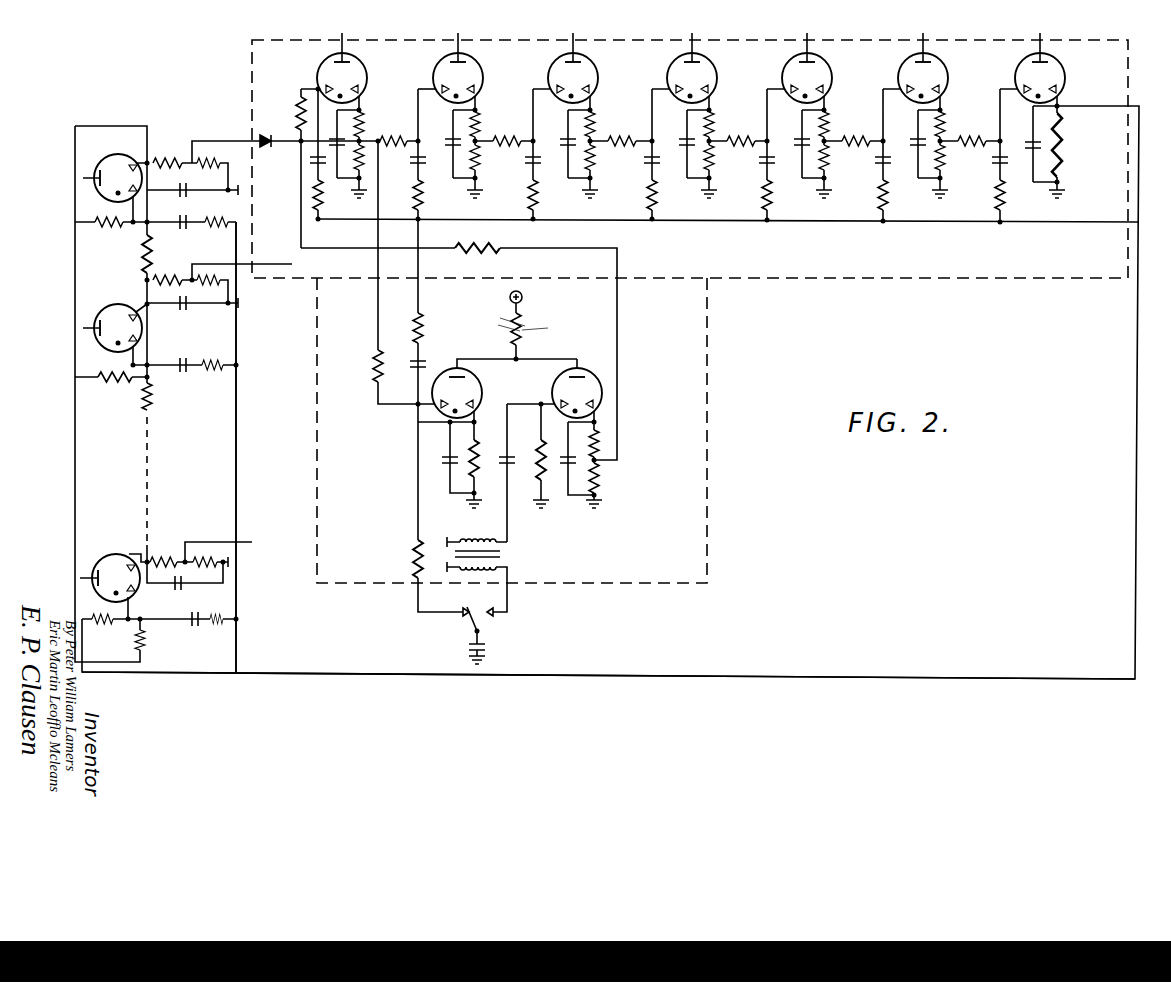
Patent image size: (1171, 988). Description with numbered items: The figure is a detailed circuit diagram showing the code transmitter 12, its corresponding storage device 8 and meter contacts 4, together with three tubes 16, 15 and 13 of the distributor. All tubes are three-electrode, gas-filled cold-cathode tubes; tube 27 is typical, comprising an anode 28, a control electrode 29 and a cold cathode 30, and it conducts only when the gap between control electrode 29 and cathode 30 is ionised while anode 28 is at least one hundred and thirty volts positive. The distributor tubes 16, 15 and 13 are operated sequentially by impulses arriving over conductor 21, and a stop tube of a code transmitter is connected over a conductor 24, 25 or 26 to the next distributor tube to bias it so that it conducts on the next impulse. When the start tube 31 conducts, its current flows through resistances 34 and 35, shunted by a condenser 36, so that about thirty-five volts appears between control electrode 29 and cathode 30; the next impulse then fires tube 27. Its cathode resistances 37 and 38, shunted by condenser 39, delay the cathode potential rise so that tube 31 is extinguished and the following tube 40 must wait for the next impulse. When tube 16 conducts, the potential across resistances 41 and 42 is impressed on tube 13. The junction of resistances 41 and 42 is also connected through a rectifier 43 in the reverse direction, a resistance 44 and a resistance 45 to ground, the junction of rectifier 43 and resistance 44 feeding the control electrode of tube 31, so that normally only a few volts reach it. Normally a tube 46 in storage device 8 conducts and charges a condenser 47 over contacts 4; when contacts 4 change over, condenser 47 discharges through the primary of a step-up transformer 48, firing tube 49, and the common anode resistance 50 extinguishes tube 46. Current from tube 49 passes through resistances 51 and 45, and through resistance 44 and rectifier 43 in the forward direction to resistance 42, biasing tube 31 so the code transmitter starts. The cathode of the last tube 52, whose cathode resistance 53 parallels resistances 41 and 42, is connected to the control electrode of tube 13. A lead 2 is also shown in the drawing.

The output lead 2 is at (1139, 222).
The meter contacts 4 is at (487, 620).
The storage device 8 is at (693, 494).
The code transmitter 12 is at (1119, 68).
The distributor tube 13 is at (131, 557).
The distributor tube 15 is at (153, 273).
The distributor tube 16 is at (157, 153).
The conductor 21 is at (237, 645).
The conductor 24 is at (92, 378).
The conductor 25 is at (82, 240).
The conductor 26 is at (907, 677).
The tube 27 is at (485, 72).
The anode 28 is at (478, 47).
The control electrode 29 is at (442, 88).
The cold cathode 30 is at (470, 89).
The start tube 31 is at (368, 72).
The resistance 34 is at (363, 118).
The resistance 35 is at (362, 163).
The condenser 36 is at (337, 173).
The resistance 37 is at (480, 120).
The resistance 38 is at (480, 162).
The condenser 39 is at (458, 158).
The tube 40 is at (595, 77).
The resistance 41 is at (180, 152).
The resistance 42 is at (221, 163).
The rectifier 43 is at (268, 133).
The resistance 44 is at (500, 247).
The resistance 45 is at (598, 487).
The tube 46 is at (482, 383).
The condenser 47 is at (487, 643).
The step-up transformer 48 is at (500, 553).
The tube 49 is at (588, 377).
The resistance 50 is at (523, 327).
The resistance 51 is at (598, 446).
The last tube 52 is at (1067, 72).
The resistance 53 is at (1065, 150).